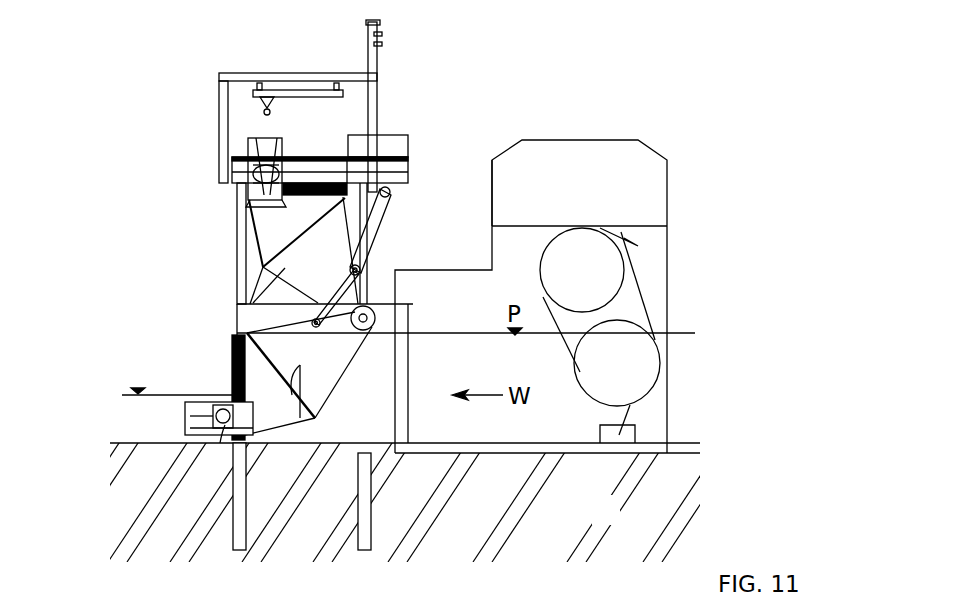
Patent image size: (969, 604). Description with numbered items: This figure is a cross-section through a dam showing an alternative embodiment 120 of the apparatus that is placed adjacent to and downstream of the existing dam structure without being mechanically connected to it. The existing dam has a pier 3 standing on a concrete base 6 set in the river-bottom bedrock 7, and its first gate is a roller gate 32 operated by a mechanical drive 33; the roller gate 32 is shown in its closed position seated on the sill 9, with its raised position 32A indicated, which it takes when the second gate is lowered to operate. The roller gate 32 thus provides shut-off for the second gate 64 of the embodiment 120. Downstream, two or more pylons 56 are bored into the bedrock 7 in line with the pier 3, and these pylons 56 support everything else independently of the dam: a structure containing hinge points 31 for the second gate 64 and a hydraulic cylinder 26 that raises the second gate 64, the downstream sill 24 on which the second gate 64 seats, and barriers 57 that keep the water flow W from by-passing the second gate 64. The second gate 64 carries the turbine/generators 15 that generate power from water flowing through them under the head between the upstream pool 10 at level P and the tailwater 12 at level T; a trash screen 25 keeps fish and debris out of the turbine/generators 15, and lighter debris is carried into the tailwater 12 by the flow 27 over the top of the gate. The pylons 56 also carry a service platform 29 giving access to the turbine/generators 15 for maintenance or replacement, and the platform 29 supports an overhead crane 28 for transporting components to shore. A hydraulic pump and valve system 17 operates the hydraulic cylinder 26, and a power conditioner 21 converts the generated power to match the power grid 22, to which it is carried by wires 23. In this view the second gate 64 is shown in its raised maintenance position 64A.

The alternative embodiment 120 is at (545, 86).
The power grid 22 is at (380, 34).
The wires 23 is at (377, 105).
The overhead crane 28 is at (298, 92).
The power conditioner 21 is at (345, 153).
The hydraulic pump and valve system 17 is at (398, 142).
The service platform 29 is at (380, 178).
The hydraulic cylinder 26 is at (390, 205).
The raised maintenance position of second gate 64A is at (313, 183).
The pylons 56 is at (245, 538).
The hinge points 31 is at (372, 320).
The pier 3 is at (554, 271).
The mechanical drive 33 is at (552, 193).
The raised position of first gate 32A is at (582, 270).
The roller gate 32 is at (601, 331).
The upstream pool 10 is at (550, 296).
The sill 9 is at (617, 436).
The concrete base 6 is at (660, 449).
The bedrock 7 is at (391, 501).
The barriers 57 is at (325, 346).
The second gate 64 is at (240, 335).
The flow over second gate 27 is at (206, 394).
The trash screen 25 is at (308, 373).
The tailwater 12 is at (177, 397).
The downstream sill 24 is at (240, 443).
The turbine/generators 15 is at (222, 440).